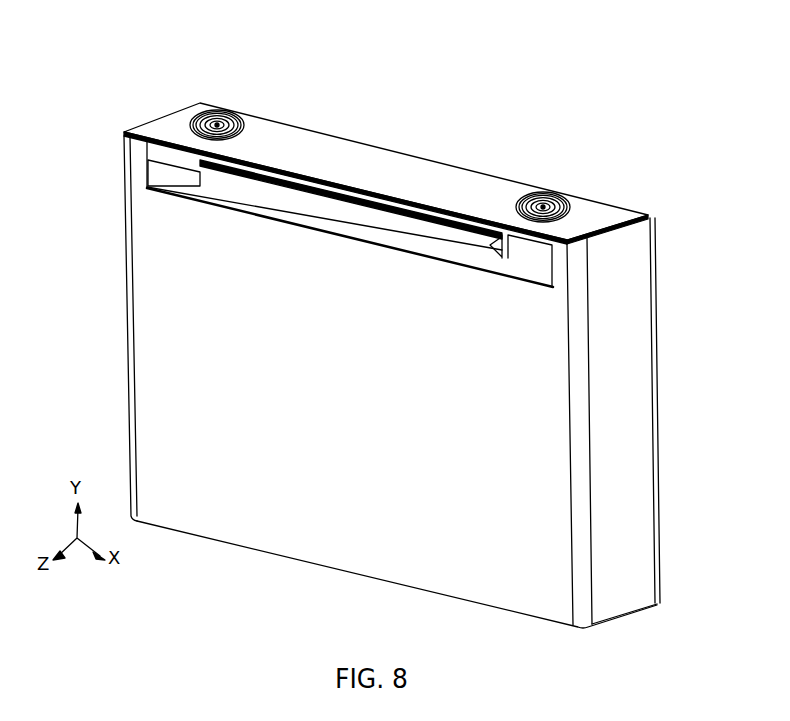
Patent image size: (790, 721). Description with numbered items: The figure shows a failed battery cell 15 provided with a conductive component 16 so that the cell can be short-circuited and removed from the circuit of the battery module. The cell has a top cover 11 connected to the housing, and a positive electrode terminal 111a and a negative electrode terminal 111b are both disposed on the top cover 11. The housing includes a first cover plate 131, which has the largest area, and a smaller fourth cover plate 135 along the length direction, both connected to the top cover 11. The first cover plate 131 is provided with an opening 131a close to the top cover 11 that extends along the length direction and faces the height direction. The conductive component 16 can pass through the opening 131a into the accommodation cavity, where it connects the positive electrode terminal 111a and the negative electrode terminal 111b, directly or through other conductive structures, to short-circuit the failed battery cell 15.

The failed battery cell 15 is at (112, 88).
The top cover 11 is at (370, 147).
The positive electrode terminal 111a is at (222, 120).
The negative electrode terminal 111b is at (560, 197).
The first cover plate 131 is at (397, 576).
The opening 131a is at (157, 167).
The fourth cover plate 135 is at (633, 602).
The conductive component 16 is at (540, 281).